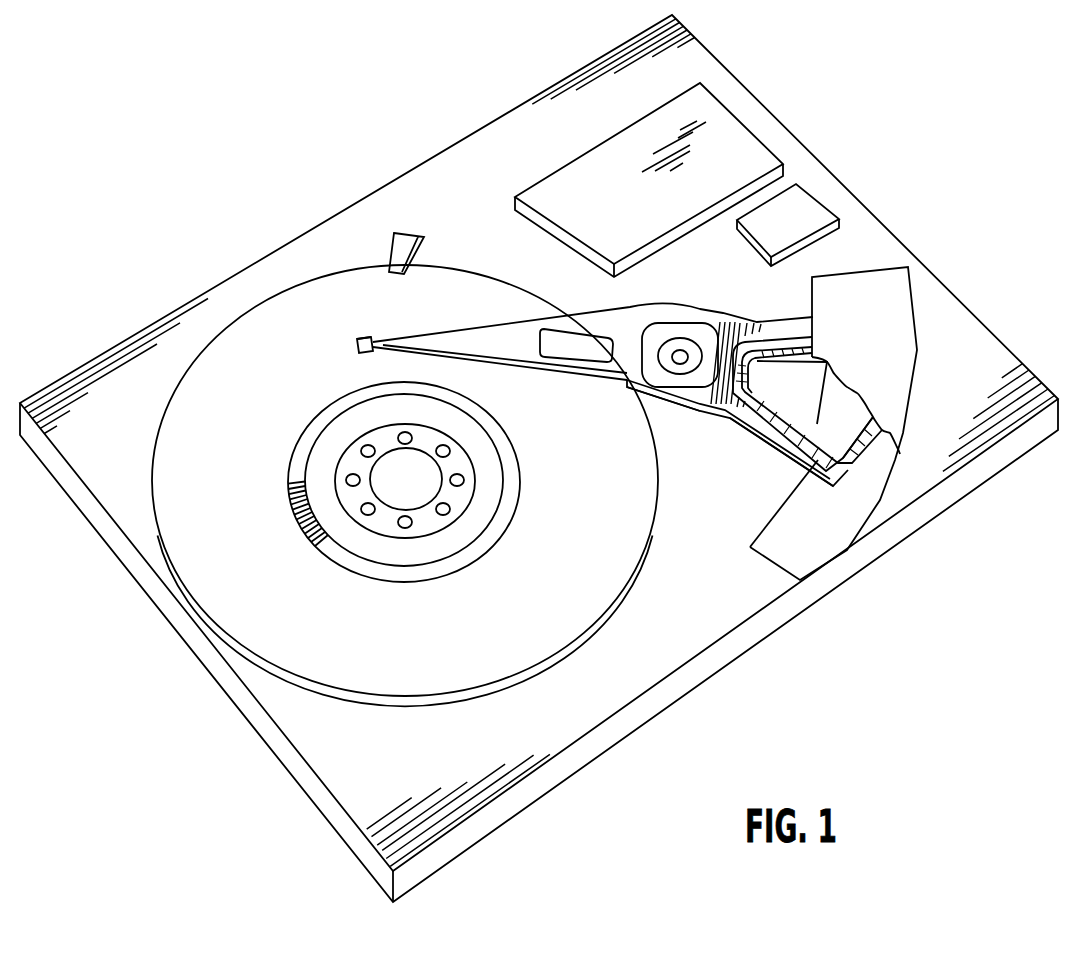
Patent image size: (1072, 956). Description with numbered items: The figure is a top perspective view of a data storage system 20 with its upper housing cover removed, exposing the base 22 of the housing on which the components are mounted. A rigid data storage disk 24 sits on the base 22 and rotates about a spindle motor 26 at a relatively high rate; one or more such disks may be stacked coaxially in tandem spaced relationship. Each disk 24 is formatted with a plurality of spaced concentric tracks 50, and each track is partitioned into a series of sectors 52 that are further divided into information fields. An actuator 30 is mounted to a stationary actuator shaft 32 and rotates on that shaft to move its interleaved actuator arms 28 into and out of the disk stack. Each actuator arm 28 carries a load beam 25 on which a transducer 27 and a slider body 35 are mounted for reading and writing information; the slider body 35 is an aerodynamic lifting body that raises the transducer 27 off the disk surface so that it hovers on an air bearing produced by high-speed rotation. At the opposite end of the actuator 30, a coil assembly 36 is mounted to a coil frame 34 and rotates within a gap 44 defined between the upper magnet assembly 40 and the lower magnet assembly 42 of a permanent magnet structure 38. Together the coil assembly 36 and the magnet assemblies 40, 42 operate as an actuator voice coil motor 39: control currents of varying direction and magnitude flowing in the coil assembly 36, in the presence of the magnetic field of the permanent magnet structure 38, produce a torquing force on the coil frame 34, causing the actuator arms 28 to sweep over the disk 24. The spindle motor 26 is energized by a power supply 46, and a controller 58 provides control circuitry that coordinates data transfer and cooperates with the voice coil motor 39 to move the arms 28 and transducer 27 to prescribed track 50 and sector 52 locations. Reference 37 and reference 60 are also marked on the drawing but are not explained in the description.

The data storage system 20 is at (862, 136).
The base 22 is at (714, 659).
The rigid data storage disk 24 is at (214, 466).
The load beam 25 is at (380, 347).
The spindle motor 26 is at (423, 503).
The transducer 27 is at (368, 350).
The actuator arm 28 is at (512, 350).
The actuator 30 is at (696, 400).
The actuator shaft 32 is at (680, 349).
The coil frame 34 is at (740, 322).
The slider body 35 is at (357, 338).
The coil assembly 36 is at (762, 362).
The arm side 37 is at (668, 418).
The permanent magnet structure 38 is at (920, 296).
The actuator voice coil motor 39 is at (795, 472).
The upper magnet assembly 40 is at (903, 350).
The lower magnet assembly 42 is at (772, 552).
The gap 44 is at (880, 447).
The power supply 46 is at (617, 220).
The track 50 is at (301, 428).
The sector 52 is at (292, 517).
The controller 58 is at (802, 230).
The tab 60 is at (421, 232).